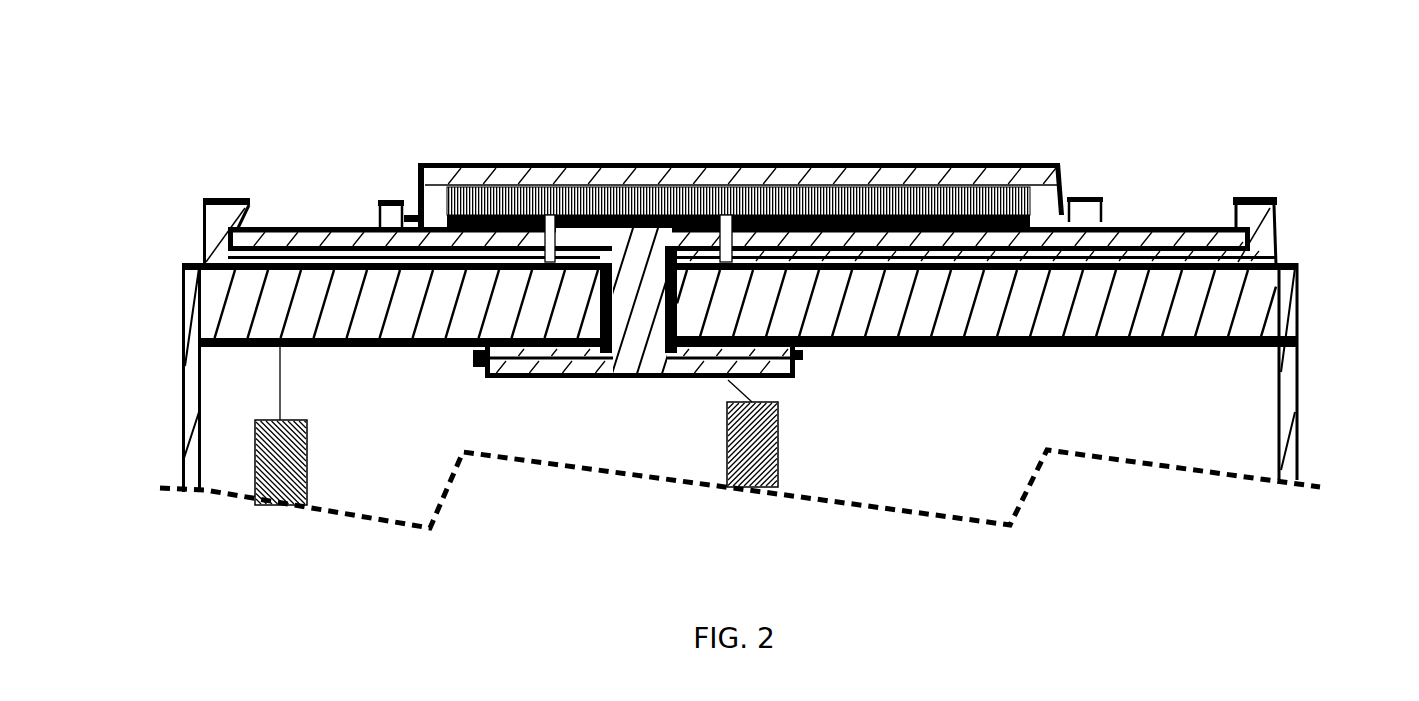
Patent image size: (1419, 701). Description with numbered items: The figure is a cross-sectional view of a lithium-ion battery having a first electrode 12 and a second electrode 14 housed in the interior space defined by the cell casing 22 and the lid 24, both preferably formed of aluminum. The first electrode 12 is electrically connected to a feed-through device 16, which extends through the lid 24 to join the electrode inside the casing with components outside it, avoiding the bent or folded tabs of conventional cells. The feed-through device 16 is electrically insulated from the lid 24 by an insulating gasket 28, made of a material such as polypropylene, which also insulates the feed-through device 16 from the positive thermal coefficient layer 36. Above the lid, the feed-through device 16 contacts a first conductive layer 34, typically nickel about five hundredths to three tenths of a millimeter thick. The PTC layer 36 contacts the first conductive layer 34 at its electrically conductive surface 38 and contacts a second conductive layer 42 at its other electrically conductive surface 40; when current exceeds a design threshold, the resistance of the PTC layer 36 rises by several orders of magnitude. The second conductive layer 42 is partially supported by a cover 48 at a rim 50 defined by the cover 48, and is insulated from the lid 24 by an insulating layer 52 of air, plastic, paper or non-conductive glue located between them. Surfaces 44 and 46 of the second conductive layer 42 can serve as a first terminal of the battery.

The first electrode 12 is at (767, 453).
The second electrode 14 is at (280, 482).
The feed-through device 16 is at (653, 345).
The cell casing 22 is at (190, 398).
The lid 24 is at (245, 313).
The insulating gasket 28 is at (735, 257).
The first conductive layer 34 is at (882, 205).
The positive thermal coefficient layer 36 is at (1032, 218).
The electrically conductive surface 38 is at (490, 228).
The electrically conductive surface 40 is at (392, 220).
The second conductive layer 42 is at (947, 238).
The surface of second conductive layer 44 is at (312, 228).
The surface of second conductive layer 46 is at (1147, 222).
The cover 48 is at (495, 182).
The rim 50 is at (206, 200).
The insulating layer 52 is at (1200, 252).